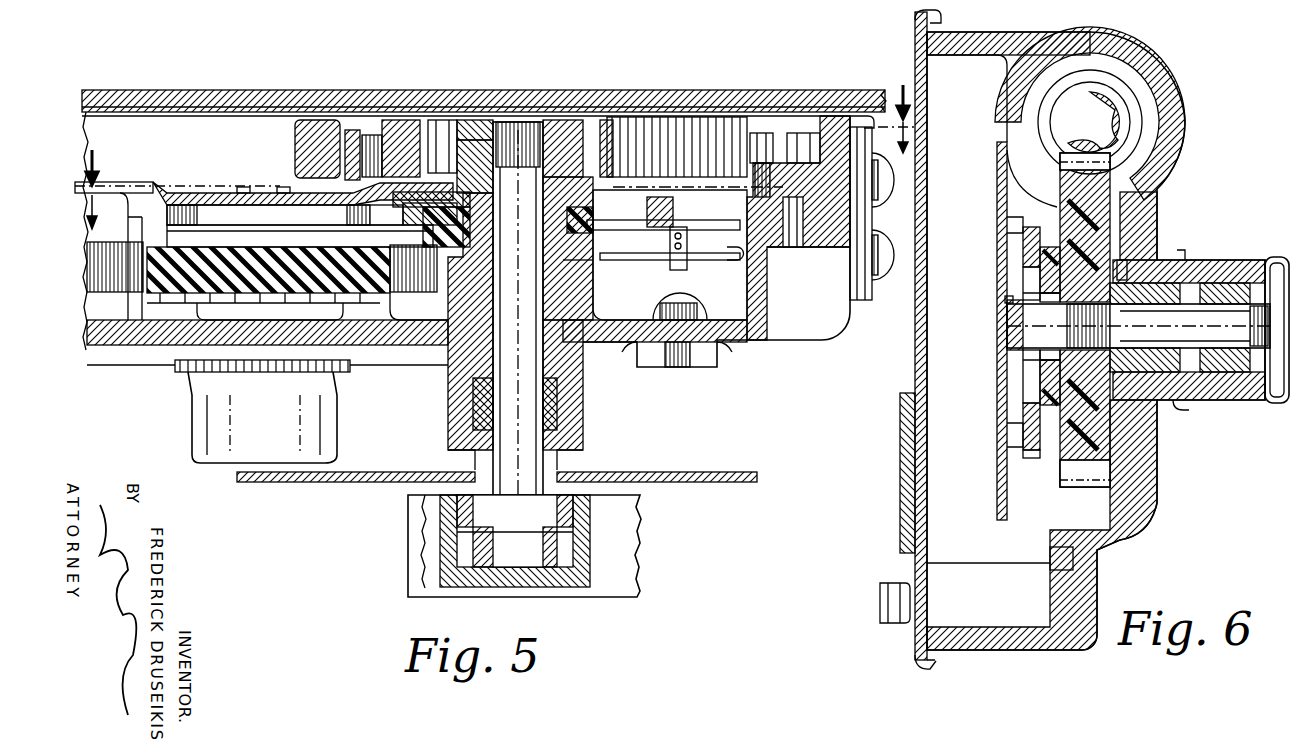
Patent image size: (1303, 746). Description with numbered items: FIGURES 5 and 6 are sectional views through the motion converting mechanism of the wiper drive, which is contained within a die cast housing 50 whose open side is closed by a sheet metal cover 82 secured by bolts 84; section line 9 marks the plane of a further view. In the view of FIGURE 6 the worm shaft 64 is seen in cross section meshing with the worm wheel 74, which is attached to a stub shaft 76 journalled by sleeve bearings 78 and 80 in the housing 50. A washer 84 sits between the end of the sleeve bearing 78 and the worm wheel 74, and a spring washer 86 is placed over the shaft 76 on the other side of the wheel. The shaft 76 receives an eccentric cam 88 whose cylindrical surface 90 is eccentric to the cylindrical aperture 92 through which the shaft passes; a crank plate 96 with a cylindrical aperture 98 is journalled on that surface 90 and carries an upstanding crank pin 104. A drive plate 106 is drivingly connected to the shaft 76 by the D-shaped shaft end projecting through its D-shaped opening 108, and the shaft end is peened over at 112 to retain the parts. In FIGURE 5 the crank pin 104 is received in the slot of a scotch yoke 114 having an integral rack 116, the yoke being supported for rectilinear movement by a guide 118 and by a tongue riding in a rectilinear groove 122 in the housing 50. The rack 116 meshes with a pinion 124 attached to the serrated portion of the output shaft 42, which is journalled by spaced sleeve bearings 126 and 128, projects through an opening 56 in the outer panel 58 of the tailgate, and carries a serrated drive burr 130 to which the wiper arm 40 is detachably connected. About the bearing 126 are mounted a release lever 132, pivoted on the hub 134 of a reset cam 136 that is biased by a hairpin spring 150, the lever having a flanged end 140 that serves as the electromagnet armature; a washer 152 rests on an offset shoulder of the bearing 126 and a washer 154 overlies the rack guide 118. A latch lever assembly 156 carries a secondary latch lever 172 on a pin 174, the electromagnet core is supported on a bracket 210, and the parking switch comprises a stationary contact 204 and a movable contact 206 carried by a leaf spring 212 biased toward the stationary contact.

In FIG. 5, the section line 9 is at (496, 140).
In FIG. 5, the wiper arm 40 is at (593, 587).
In FIG. 5, the output shaft 42 is at (503, 407).
In FIG. 5, the housing 50 is at (747, 333).
In FIG. 6, the housing 50 is at (1033, 647).
In FIG. 5, the opening 56 is at (473, 467).
In FIG. 5, the outer panel 58 is at (717, 477).
In FIG. 5, the worm shaft 64 is at (160, 293).
In FIG. 6, the worm shaft 64 is at (1077, 117).
In FIG. 5, the worm wheel 74 is at (267, 282).
In FIG. 6, the worm wheel 74 is at (1067, 503).
In FIG. 5, the stub shaft 76 is at (253, 190).
In FIG. 6, the stub shaft 76 is at (1008, 333).
In FIG. 6, the sleeve bearing 78 is at (1157, 367).
In FIG. 6, the sleeve bearing 80 is at (1233, 365).
In FIG. 5, the sheet metal cover 82 is at (200, 111).
In FIG. 6, the sheet metal cover 82 is at (1260, 273).
In FIG. 6, the bolt 84 is at (880, 600).
In FIG. 6, the spring washer 86 is at (1027, 380).
In FIG. 5, the eccentric cam 88 is at (260, 233).
In FIG. 6, the eccentric cam 88 is at (1023, 362).
In FIG. 6, the cylindrical surface 90 is at (1027, 253).
In FIG. 6, the cylindrical aperture 92 is at (1040, 307).
In FIG. 5, the crank plate 96 is at (207, 213).
In FIG. 6, the crank plate 96 is at (1037, 458).
In FIG. 6, the cylindrical aperture 98 is at (1030, 383).
In FIG. 5, the crank pin 104 is at (368, 140).
In FIG. 5, the drive plate 106 is at (150, 187).
In FIG. 6, the drive plate 106 is at (993, 510).
In FIG. 6, the D-shaped opening 108 is at (1037, 293).
In FIG. 5, the elongate slot 112 is at (347, 133).
In FIG. 6, the elongate slot 112 is at (1007, 300).
In FIG. 5, the scotch yoke 114 is at (293, 118).
In FIG. 5, the rack 116 is at (703, 127).
In FIG. 5, the guide 118 is at (460, 193).
In FIG. 6, the rectilinear groove 122 is at (1060, 557).
In FIG. 5, the pinion 124 is at (450, 120).
In FIG. 5, the sleeve bearing 126 is at (560, 317).
In FIG. 5, the sleeve bearing 128 is at (473, 390).
In FIG. 5, the serrated drive burr 130 is at (563, 497).
In FIG. 5, the release lever 132 is at (628, 291).
In FIG. 5, the hub 134 is at (457, 253).
In FIG. 5, the reset cam 136 is at (460, 228).
In FIG. 5, the flanged end 140 is at (740, 262).
In FIG. 5, the hairpin spring 150 is at (425, 120).
In FIG. 5, the washer 152 is at (594, 202).
In FIG. 5, the washer 154 is at (537, 180).
In FIG. 5, the latch lever assembly 156 is at (745, 216).
In FIG. 5, the secondary latch lever 172 is at (688, 240).
In FIG. 5, the pin 174 is at (660, 240).
In FIG. 5, the stationary contact 204 is at (757, 157).
In FIG. 5, the movable contact 206 is at (815, 150).
In FIG. 5, the bracket 210 is at (863, 297).
In FIG. 5, the leaf spring 212 is at (813, 167).